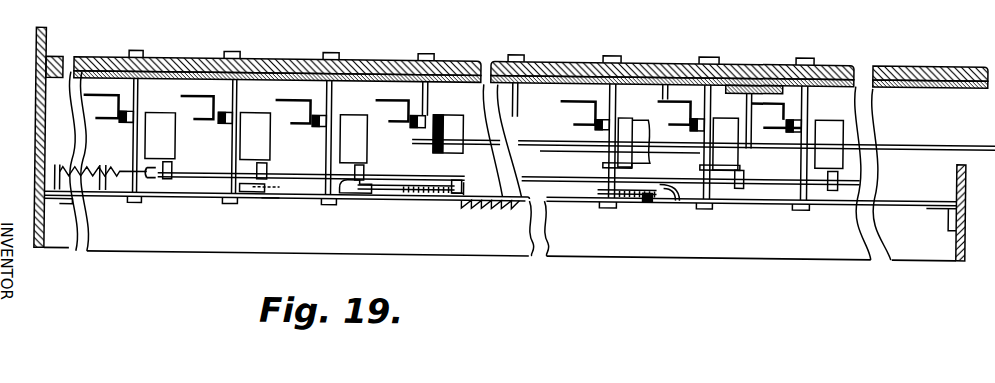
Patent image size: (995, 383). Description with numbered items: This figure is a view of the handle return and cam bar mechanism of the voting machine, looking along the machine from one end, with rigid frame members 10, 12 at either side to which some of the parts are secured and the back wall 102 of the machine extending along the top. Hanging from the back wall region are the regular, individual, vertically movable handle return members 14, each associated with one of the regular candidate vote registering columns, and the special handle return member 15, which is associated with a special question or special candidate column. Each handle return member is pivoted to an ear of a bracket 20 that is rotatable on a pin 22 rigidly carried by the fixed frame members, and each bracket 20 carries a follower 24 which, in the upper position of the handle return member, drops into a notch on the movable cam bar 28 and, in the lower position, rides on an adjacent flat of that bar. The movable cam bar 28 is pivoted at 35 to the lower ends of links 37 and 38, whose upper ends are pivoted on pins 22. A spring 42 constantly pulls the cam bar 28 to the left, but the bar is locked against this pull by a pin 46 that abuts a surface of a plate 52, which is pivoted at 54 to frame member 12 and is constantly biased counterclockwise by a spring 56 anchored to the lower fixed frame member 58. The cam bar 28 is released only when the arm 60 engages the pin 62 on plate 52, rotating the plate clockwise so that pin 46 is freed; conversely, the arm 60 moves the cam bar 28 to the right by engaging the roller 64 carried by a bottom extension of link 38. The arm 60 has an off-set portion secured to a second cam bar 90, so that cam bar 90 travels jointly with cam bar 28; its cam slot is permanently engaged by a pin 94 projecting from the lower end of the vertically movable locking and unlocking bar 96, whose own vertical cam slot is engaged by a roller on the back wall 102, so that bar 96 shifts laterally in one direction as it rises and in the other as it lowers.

The rigid frame member 10 is at (35, 43).
The rigid frame member 12 is at (115, 197).
The regular handle return member 14 is at (373, 97).
The special handle return member 15 is at (95, 93).
The bracket 20 is at (256, 118).
The pin 22 is at (137, 203).
The follower 24 is at (168, 179).
The movable cam bar 28 is at (197, 178).
The pivot 35 is at (270, 198).
The link 37 is at (250, 192).
The link 38 is at (630, 196).
The spring 42 is at (113, 166).
The pin 46 is at (451, 197).
The plate 52 is at (425, 192).
The pivot 54 is at (357, 192).
The spring 56 is at (507, 208).
The lower fixed frame member 58 is at (135, 252).
The arm 60 is at (585, 178).
The pin 62 is at (380, 188).
The roller 64 is at (670, 180).
The second cam bar 90 is at (953, 136).
The pin 94 is at (736, 78).
The locking and unlocking bar 96 is at (778, 78).
The back wall 102 is at (178, 57).